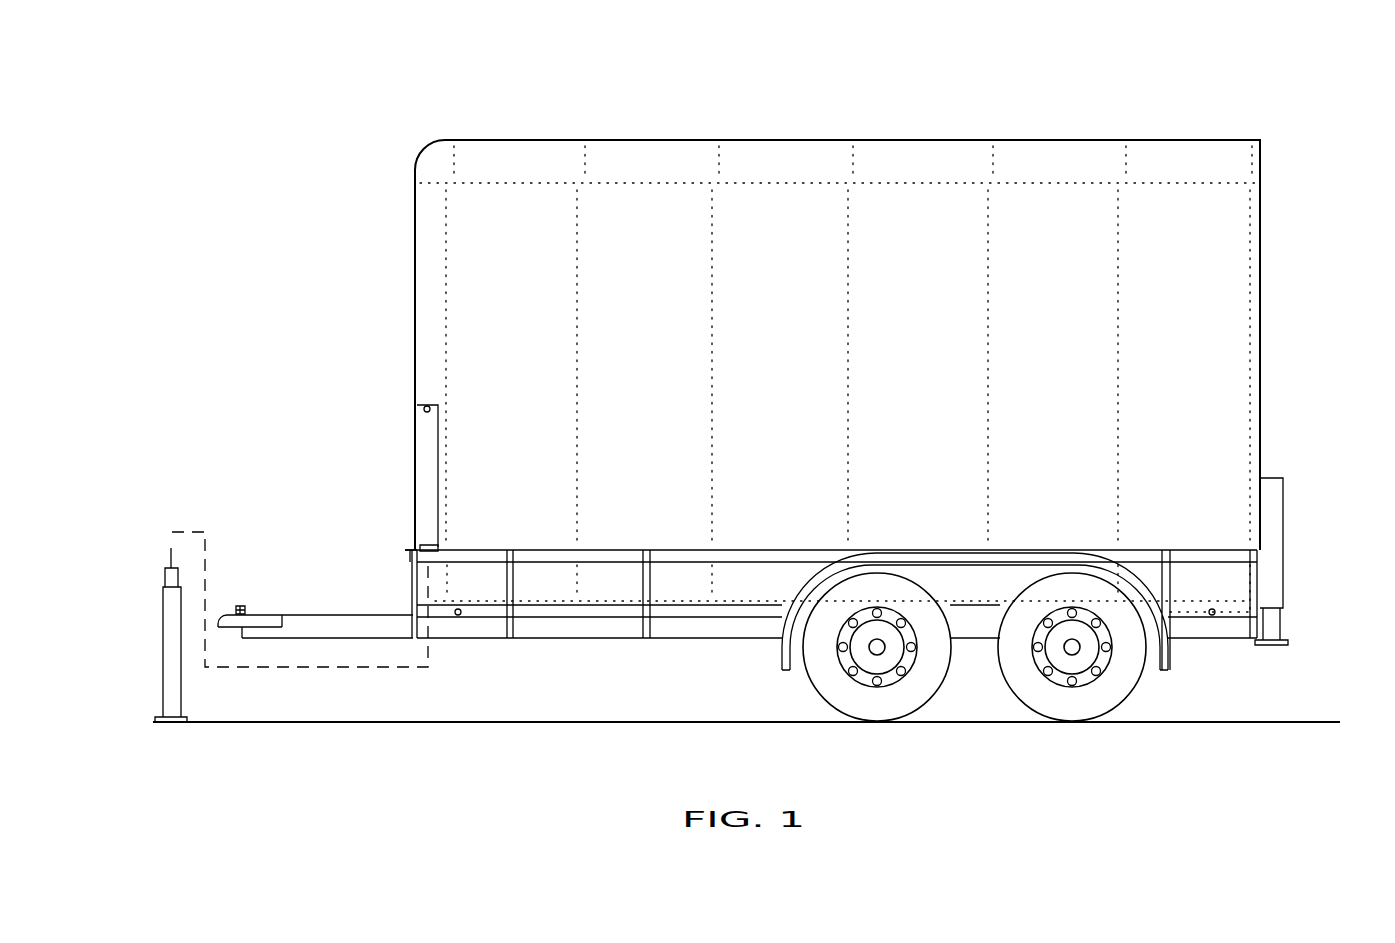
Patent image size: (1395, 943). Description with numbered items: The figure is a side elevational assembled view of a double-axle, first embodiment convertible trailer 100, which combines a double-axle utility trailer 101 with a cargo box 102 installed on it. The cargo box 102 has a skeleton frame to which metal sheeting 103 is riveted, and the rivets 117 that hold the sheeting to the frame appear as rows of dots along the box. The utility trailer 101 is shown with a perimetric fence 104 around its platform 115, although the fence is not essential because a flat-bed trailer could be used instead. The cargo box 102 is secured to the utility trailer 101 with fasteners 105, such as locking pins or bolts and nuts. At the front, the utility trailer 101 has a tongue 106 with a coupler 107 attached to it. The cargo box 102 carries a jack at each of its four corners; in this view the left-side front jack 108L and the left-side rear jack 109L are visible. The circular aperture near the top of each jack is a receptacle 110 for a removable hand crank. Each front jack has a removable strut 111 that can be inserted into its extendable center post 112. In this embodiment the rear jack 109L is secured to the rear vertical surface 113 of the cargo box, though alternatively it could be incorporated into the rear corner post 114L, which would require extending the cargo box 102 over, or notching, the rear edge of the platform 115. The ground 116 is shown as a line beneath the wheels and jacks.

The convertible trailer 100 is at (378, 123).
The utility trailer 101 is at (840, 635).
The cargo box 102 is at (892, 309).
The metal sheeting 103 is at (908, 217).
The perimetric fence 104 is at (610, 555).
The fasteners 105 is at (457, 617).
The tongue 106 is at (378, 625).
The coupler 107 is at (227, 612).
The left-side front jack 108L is at (373, 483).
The left-side rear jack 109L is at (1270, 523).
The receptacle 110 is at (418, 410).
The removable strut 111 is at (172, 680).
The extendable center post 112 is at (415, 548).
The rear vertical surface 113 is at (1262, 435).
The rear corner post 114L is at (1250, 340).
The platform 115 is at (1237, 615).
The ground 116 is at (760, 721).
The rivets 117 is at (710, 152).